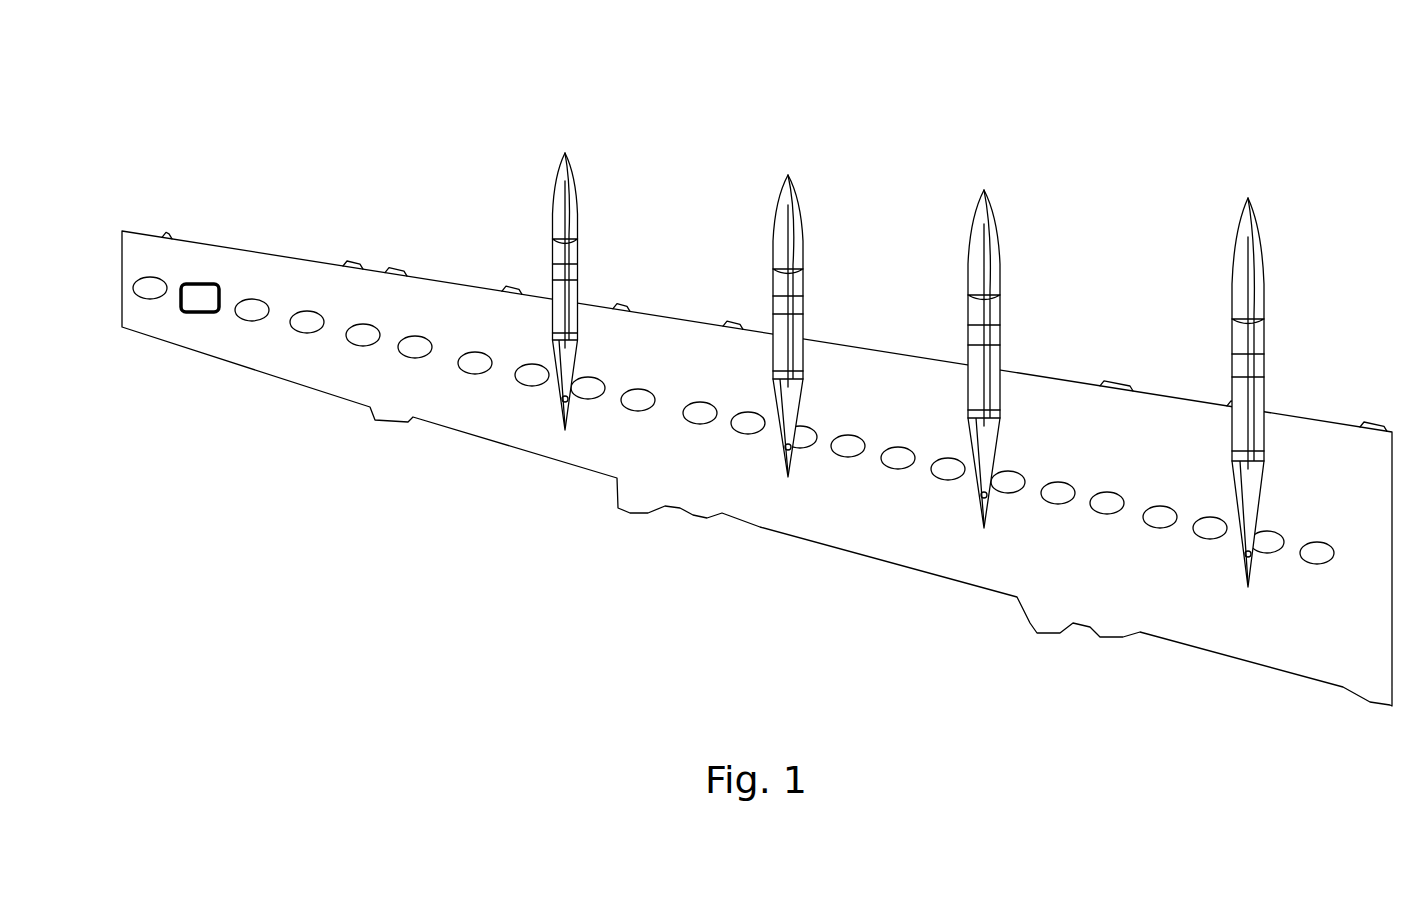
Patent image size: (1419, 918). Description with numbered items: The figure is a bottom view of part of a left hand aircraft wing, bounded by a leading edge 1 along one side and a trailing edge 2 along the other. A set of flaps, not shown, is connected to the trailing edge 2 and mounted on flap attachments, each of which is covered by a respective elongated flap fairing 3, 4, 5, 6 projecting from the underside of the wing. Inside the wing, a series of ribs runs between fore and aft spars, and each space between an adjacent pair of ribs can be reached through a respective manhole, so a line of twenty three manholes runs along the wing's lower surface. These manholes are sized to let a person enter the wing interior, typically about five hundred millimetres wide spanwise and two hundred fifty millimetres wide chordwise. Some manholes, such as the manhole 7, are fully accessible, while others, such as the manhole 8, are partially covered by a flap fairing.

The leading edge 1 is at (518, 450).
The trailing edge 2 is at (473, 285).
The flap fairing 3 is at (557, 188).
The flap fairing 4 is at (775, 227).
The flap fairing 5 is at (973, 223).
The flap fairing 6 is at (1238, 230).
The fully accessible manhole 7 is at (1100, 514).
The partially covered manhole 8 is at (1270, 535).